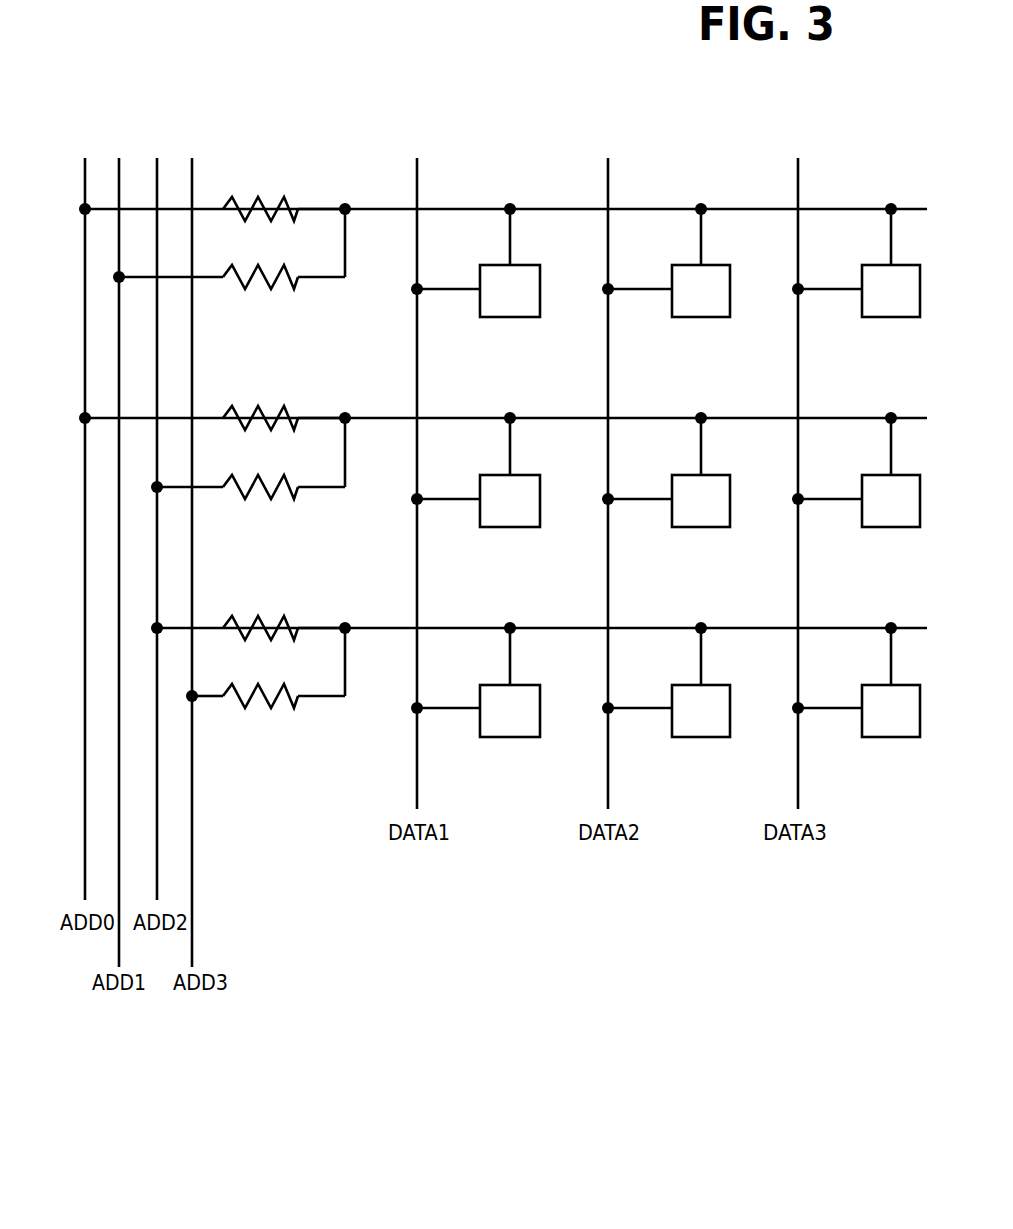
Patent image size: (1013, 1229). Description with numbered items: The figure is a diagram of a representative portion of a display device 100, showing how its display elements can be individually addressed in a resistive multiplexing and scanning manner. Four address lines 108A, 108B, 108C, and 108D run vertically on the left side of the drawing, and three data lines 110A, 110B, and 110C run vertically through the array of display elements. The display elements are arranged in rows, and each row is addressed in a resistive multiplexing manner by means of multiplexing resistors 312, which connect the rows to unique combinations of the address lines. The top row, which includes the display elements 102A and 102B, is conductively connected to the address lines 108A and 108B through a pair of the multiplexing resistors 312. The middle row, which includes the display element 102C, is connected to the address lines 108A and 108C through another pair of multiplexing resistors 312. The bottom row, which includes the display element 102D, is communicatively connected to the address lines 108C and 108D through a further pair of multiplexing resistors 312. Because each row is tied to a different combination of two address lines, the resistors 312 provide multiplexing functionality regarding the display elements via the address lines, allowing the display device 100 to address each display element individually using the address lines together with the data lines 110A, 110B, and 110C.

The display device 100 is at (622, 975).
The display element 102A is at (507, 318).
The display element 102B is at (697, 318).
The display element 102C is at (507, 528).
The display element 102D is at (507, 738).
The address line 108A is at (75, 175).
The address line 108B is at (112, 178).
The address line 108C is at (155, 178).
The address line 108D is at (200, 178).
The data line 110A is at (416, 782).
The data line 110B is at (608, 790).
The data line 110C is at (798, 790).
The multiplexing resistors 312 is at (270, 295).